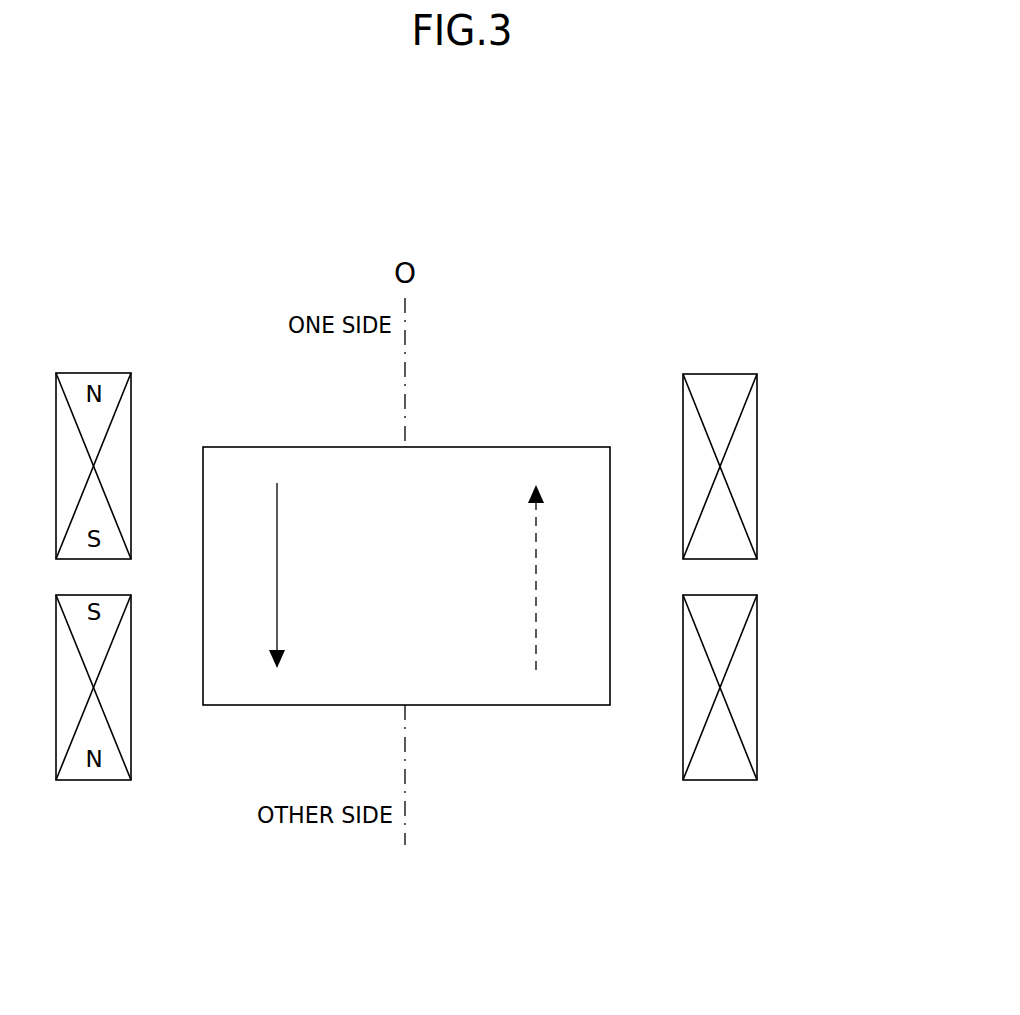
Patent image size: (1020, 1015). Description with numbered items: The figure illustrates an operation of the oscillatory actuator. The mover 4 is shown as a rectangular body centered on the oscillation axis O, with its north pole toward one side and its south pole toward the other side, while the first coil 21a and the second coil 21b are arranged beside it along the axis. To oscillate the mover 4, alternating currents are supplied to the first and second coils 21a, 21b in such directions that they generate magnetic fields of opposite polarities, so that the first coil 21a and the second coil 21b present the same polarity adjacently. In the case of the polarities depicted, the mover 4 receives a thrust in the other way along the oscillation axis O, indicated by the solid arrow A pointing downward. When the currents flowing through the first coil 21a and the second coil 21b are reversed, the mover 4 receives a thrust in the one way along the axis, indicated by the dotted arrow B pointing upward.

The mover 4 is at (567, 447).
The first coil 21a is at (757, 469).
The second coil 21b is at (757, 687).